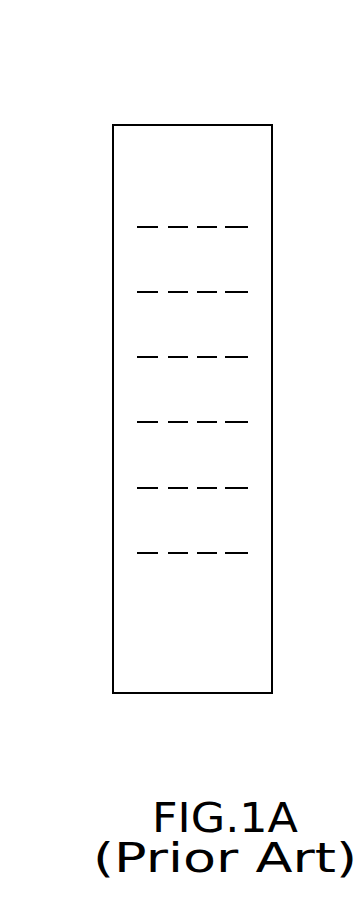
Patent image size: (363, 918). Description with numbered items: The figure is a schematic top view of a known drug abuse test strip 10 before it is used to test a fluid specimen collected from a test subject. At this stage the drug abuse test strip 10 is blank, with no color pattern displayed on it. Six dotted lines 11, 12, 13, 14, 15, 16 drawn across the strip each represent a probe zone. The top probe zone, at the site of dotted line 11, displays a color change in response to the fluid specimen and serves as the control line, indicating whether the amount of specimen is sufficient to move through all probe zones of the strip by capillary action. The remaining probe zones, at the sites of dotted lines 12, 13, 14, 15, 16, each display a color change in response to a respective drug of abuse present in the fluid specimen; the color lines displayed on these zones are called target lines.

The drug abuse test strip 10 is at (202, 125).
The dotted line 11 is at (205, 225).
The dotted line 12 is at (205, 290).
The dotted line 13 is at (205, 355).
The dotted line 14 is at (205, 420).
The dotted line 15 is at (205, 486).
The dotted line 16 is at (205, 551).